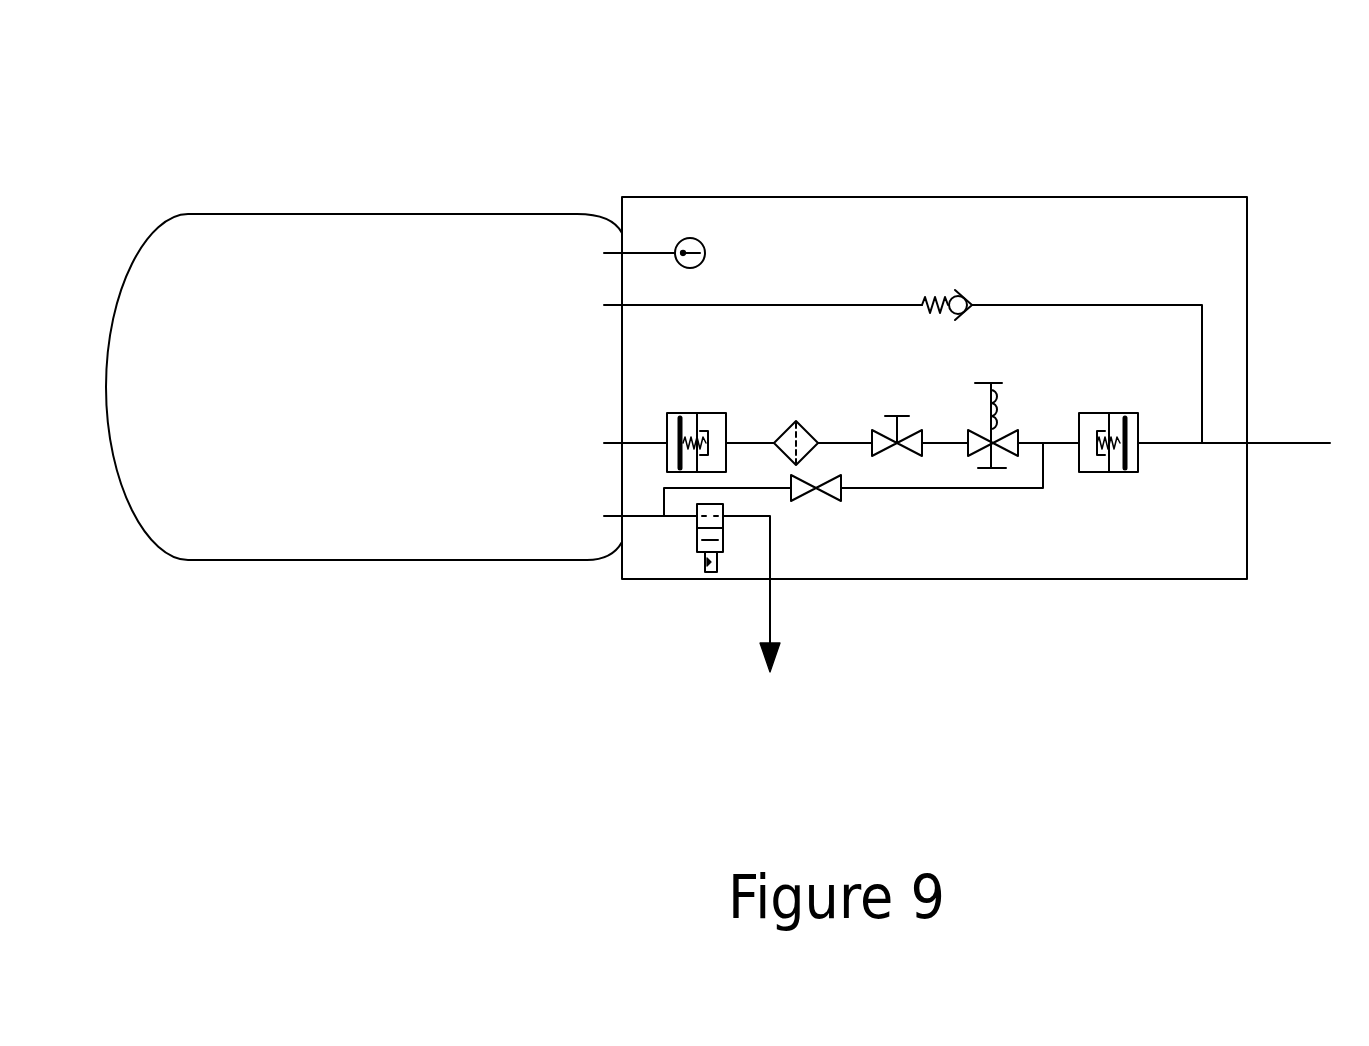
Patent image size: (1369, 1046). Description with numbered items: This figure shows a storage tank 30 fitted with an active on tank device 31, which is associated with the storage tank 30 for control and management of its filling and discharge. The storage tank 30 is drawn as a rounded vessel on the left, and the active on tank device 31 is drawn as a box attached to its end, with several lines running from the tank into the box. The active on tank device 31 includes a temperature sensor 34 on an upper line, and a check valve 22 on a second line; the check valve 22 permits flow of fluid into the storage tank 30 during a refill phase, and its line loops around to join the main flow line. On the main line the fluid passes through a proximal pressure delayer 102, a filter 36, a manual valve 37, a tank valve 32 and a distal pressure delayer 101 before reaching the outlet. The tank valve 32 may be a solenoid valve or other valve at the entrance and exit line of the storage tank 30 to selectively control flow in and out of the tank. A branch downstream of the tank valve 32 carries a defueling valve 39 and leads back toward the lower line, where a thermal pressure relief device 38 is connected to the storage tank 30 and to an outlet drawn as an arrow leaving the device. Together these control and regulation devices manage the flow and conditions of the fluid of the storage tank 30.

The storage tank 30 is at (364, 387).
The active on tank device 31 is at (667, 197).
The temperature sensor 34 is at (690, 238).
The check valve 22 is at (955, 291).
The proximal pressure delayer 102 is at (712, 413).
The filter 36 is at (796, 421).
The manual valve 37 is at (897, 416).
The tank valve 32 is at (1018, 430).
The distal pressure delayer 101 is at (1092, 413).
The thermal pressure relief device 38 is at (697, 540).
The defueling valve 39 is at (808, 512).